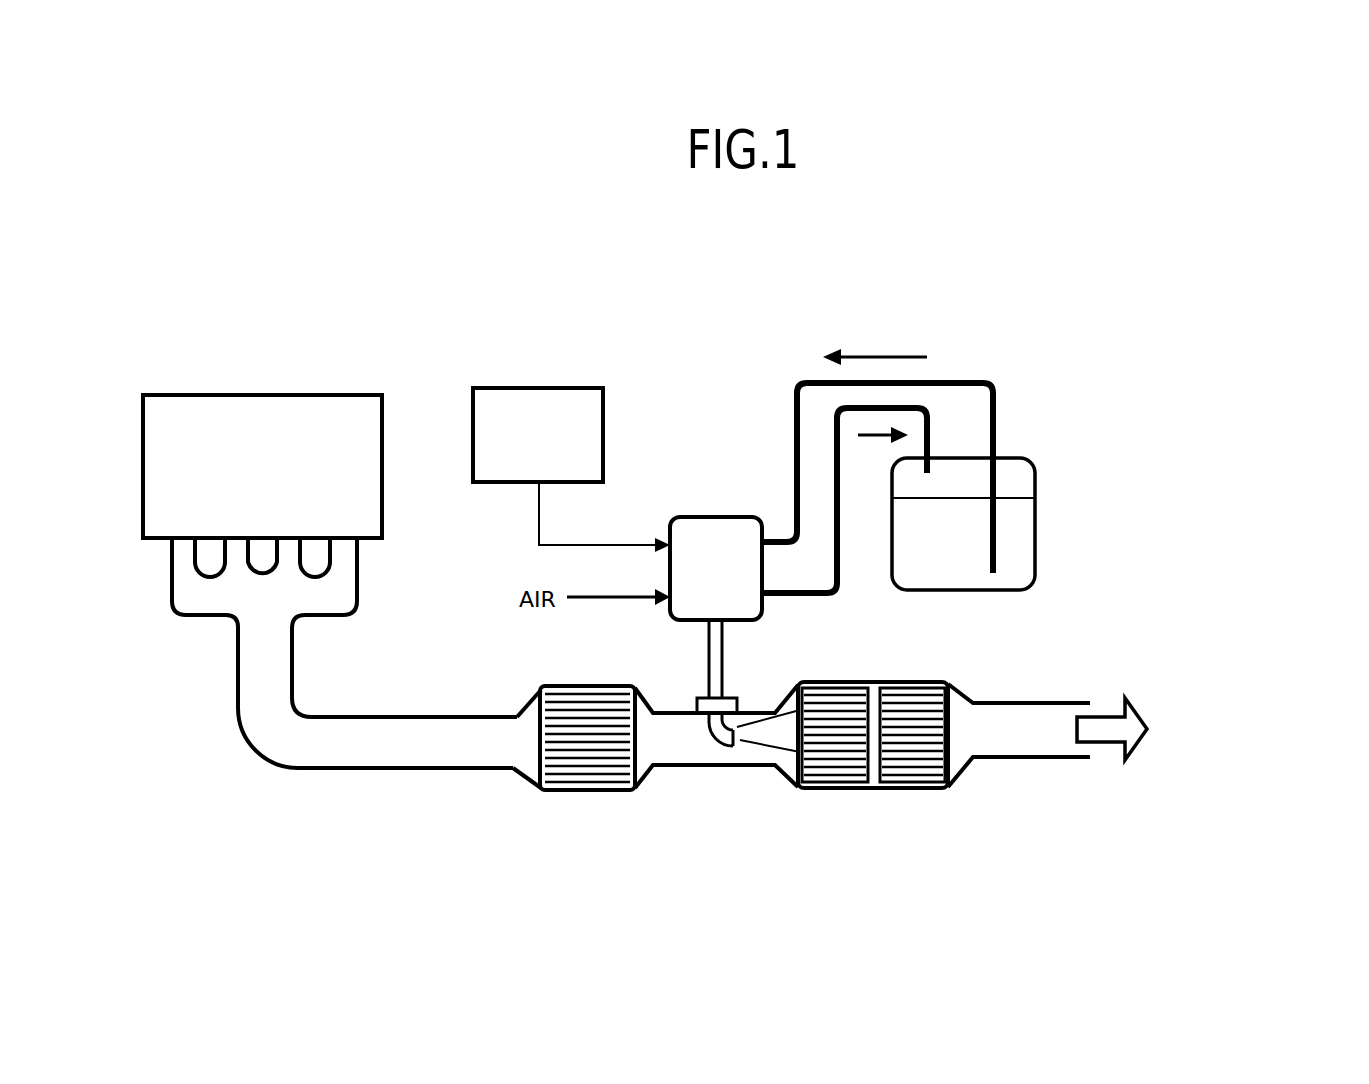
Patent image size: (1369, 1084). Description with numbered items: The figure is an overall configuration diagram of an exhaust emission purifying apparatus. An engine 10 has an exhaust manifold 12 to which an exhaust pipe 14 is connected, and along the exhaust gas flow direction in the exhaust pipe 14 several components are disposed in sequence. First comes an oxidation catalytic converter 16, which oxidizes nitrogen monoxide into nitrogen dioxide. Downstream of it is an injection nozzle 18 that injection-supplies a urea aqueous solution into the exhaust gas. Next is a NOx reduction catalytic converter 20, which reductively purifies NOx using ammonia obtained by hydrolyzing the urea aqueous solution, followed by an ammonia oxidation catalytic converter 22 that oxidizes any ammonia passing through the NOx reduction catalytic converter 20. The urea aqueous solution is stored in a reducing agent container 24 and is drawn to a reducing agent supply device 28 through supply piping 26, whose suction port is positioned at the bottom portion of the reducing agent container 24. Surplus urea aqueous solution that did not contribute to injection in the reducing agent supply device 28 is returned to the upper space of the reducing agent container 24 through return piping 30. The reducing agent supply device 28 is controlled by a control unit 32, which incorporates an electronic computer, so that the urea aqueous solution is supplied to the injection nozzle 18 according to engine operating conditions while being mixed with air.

The engine 10 is at (287, 394).
The exhaust manifold 12 is at (171, 580).
The exhaust pipe 14 is at (424, 716).
The oxidation catalytic converter 16 is at (585, 770).
The injection nozzle 18 is at (714, 730).
The NOx reduction catalytic converter 20 is at (833, 770).
The ammonia oxidation catalytic converter 22 is at (920, 770).
The reducing agent container 24 is at (1048, 485).
The supply piping 26 is at (996, 392).
The reducing agent supply device 28 is at (712, 517).
The return piping 30 is at (800, 598).
The control unit 32 is at (522, 388).